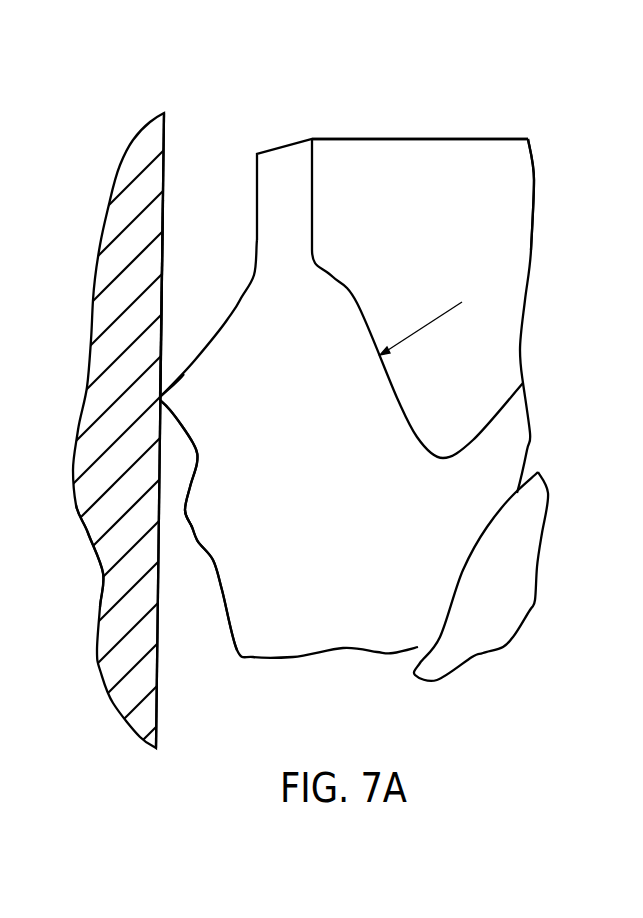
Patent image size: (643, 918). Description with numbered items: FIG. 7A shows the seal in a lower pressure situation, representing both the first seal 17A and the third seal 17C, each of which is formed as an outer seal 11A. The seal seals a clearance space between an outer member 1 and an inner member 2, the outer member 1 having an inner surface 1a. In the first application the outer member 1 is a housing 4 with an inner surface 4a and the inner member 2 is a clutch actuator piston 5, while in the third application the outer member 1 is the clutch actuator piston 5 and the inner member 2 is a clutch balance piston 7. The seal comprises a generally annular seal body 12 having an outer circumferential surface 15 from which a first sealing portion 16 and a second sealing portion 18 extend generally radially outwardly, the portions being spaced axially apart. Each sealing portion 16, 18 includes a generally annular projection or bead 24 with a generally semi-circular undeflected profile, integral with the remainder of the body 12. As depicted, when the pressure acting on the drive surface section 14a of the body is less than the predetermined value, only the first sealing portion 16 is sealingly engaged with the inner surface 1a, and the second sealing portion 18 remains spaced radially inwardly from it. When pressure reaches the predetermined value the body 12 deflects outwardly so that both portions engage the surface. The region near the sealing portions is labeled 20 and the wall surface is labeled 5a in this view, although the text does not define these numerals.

The outer member 1 is at (128, 451).
The inner surface of outer member 1a is at (170, 235).
The housing 4 is at (127, 477).
The clutch actuator piston 5 is at (157, 168).
The inner surface of housing 4a is at (199, 300).
The wall side surface 5a is at (158, 285).
The first sealing portion 16 is at (152, 384).
The projection or bead 24 is at (167, 395).
The lower contact area 20 is at (178, 518).
The second sealing portion 18 is at (103, 572).
The outer circumferential surface 15 is at (222, 592).
The seal body 12 is at (374, 508).
The drive surface section 14a is at (399, 400).
The first seal 17A is at (420, 114).
The third seal 17C is at (417, 137).
The outer seal 11A is at (529, 109).
The clutch balance piston 7 is at (525, 566).
The inner member 2 is at (499, 596).